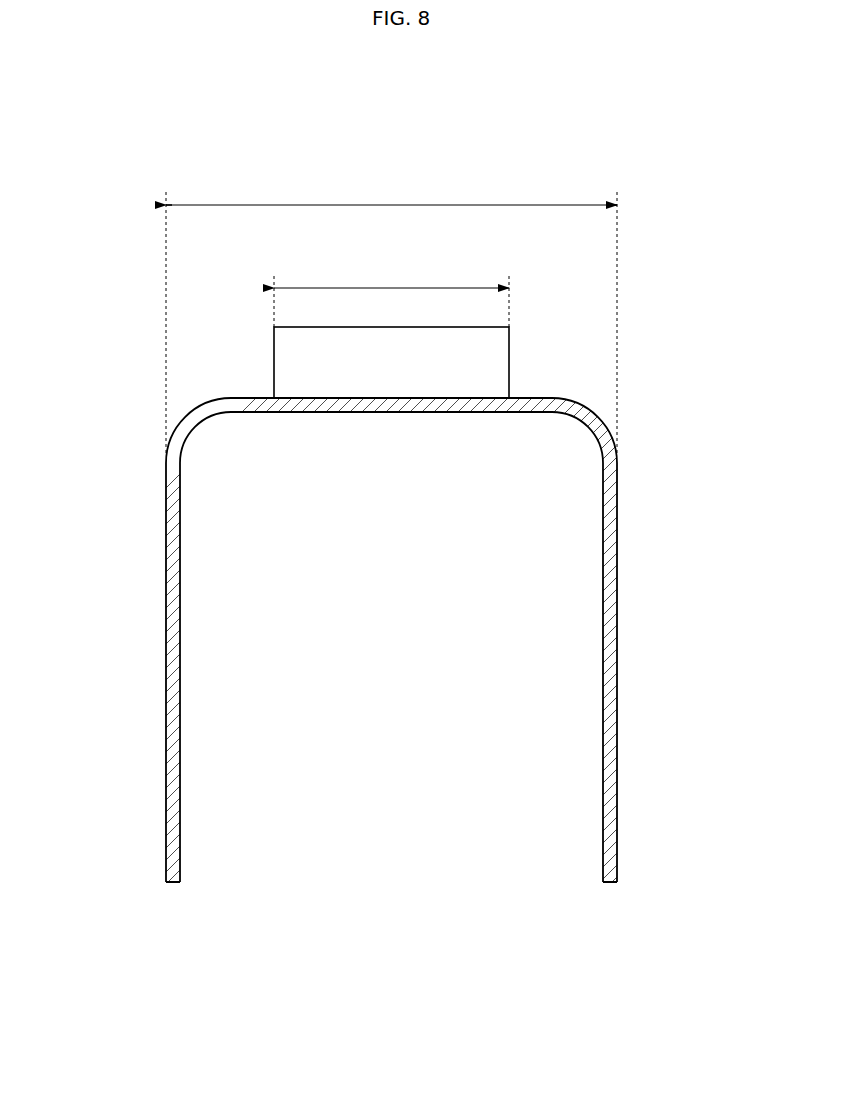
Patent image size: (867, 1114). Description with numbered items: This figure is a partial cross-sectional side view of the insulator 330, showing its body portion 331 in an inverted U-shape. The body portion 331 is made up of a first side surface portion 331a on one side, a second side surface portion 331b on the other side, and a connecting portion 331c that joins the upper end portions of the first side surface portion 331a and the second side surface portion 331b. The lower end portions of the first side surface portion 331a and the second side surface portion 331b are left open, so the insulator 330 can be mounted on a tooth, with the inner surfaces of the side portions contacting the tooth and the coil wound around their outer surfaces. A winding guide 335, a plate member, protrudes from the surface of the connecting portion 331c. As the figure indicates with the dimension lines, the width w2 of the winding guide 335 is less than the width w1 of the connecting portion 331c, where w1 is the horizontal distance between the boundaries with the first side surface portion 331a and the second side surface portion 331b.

The insulator 330 is at (115, 107).
The body portion 331 is at (657, 466).
The first side surface portion 331a is at (166, 690).
The second side surface portion 331b is at (618, 688).
The connecting portion 331c is at (535, 398).
The winding guide 335 is at (284, 362).